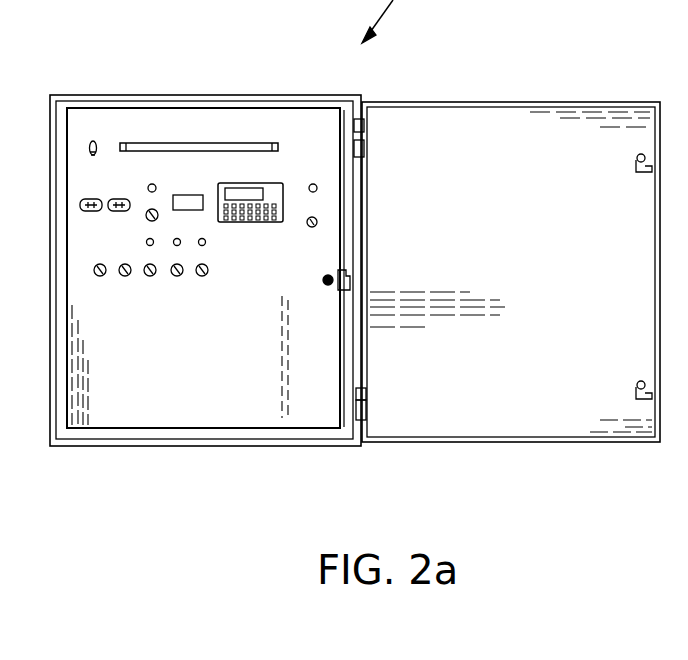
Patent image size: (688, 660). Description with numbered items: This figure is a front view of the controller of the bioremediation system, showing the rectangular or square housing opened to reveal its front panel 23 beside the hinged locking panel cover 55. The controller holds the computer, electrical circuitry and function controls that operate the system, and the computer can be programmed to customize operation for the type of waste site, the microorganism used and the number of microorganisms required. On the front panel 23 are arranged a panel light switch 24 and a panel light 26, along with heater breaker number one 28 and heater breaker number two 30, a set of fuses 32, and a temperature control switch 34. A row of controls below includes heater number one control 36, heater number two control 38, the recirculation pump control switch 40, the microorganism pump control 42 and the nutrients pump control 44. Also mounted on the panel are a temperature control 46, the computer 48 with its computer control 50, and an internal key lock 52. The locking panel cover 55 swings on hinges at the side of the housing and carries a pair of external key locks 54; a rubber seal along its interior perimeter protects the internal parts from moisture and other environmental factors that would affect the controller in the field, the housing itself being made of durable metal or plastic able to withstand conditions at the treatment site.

The front panel 23 is at (270, 282).
The panel light switch 24 is at (93, 140).
The panel light 26 is at (145, 146).
The heater breaker #1 28 is at (88, 200).
The heater breaker #2 30 is at (118, 199).
The fuses 32 is at (154, 185).
The temperature control switch 34 is at (156, 210).
The heater #1 control 36 is at (97, 276).
The heater #2 control 38 is at (124, 277).
The recirculation pump control switch 40 is at (150, 277).
The microorganism pump control 42 is at (177, 277).
The nutrients pump control 44 is at (205, 278).
The temperature control 46 is at (199, 196).
The computer 48 is at (280, 190).
The computer control 50 is at (312, 228).
The internal key lock 52 is at (333, 285).
The external key locks 54 is at (647, 162).
The locking panel cover 55 is at (493, 118).